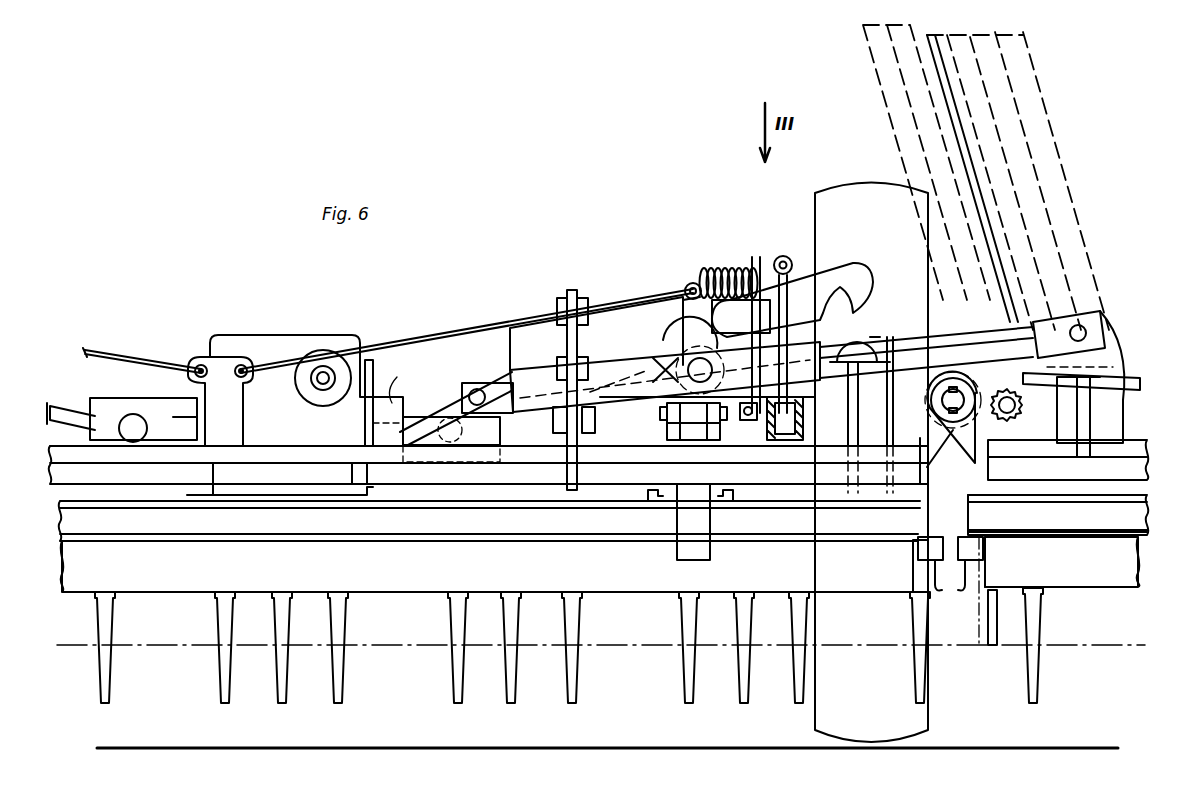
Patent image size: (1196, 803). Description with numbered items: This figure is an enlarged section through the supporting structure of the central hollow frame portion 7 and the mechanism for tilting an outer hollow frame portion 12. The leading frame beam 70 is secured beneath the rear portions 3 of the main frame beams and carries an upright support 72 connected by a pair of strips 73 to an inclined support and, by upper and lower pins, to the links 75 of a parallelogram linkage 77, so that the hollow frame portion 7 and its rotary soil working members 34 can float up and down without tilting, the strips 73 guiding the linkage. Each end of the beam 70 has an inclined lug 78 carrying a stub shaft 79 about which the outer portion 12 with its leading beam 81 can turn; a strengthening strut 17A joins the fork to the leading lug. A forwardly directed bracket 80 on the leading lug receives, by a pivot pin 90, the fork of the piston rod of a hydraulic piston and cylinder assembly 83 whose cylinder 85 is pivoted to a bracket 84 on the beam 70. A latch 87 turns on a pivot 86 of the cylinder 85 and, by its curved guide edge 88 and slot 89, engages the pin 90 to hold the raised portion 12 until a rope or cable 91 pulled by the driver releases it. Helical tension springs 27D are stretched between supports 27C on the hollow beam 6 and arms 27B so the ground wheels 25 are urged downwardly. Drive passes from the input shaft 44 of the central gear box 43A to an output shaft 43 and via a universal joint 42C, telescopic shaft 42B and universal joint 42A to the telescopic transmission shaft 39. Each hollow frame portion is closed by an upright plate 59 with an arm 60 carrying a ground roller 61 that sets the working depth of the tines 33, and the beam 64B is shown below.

The rear substantially parallel portion 3 is at (813, 413).
The hollow beam 6 is at (393, 379).
The central hollow frame portion 7 is at (295, 523).
The outer hollow frame portion 12 is at (970, 117).
The strengthening strut 17A is at (1043, 413).
The ground wheel 25 is at (840, 187).
The arm 27B is at (757, 258).
The support 27C is at (677, 323).
The helical tension spring 27D is at (730, 260).
The tine 33 is at (345, 674).
The rotary soil working member 34 is at (209, 680).
The telescopic transmission shaft 39 is at (1143, 364).
The universal joint 42A is at (707, 418).
The telescopic shaft 42B is at (70, 400).
The universal joint 42C is at (463, 388).
The output shaft 43 is at (387, 423).
The central gear box 43A is at (245, 336).
The rotary input shaft 44 is at (310, 384).
The upright plate 59 is at (977, 515).
The arm 60 is at (958, 580).
The ground roller 61 is at (658, 653).
The beam 64B is at (420, 523).
The leading frame beam 70 is at (254, 446).
The upright support 72 is at (565, 292).
The strip 73 is at (567, 362).
The link 75 is at (587, 303).
The parallelogram linkage 77 is at (588, 286).
The lug 78 is at (952, 428).
The stub shaft 79 is at (953, 383).
The bracket 80 is at (1113, 405).
The leading beam 81 is at (1147, 437).
The hydraulic piston and cylinder assembly 83 is at (521, 356).
The bracket 84 is at (477, 377).
The cylinder 85 is at (540, 400).
The pivot 86 is at (880, 352).
The latch 87 is at (837, 270).
The curved guide edge 88 is at (863, 283).
The slot 89 is at (870, 305).
The pivot pin 90 is at (1080, 317).
The rope or cable 91 is at (95, 352).